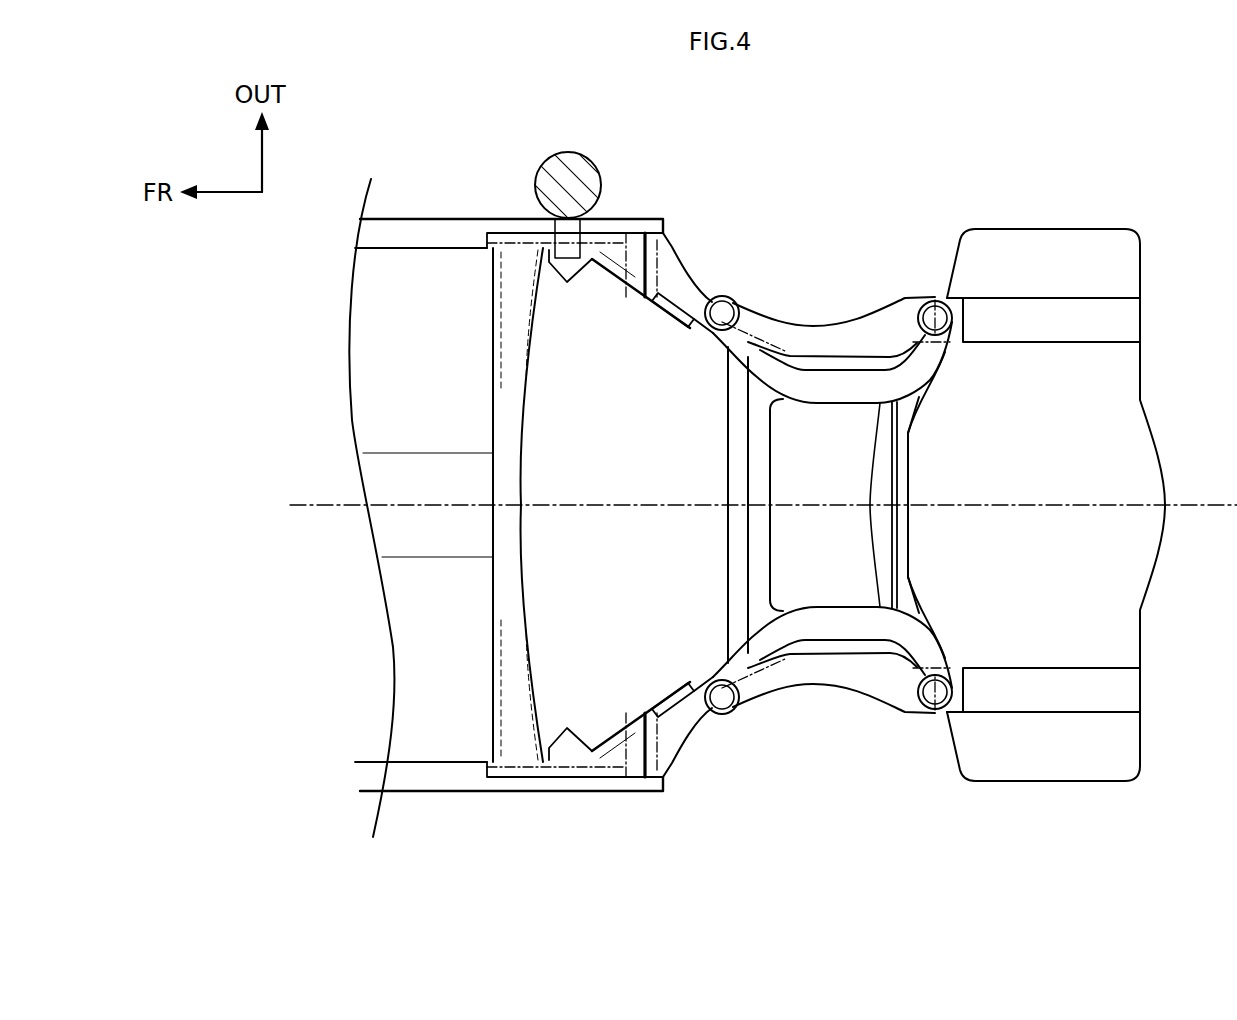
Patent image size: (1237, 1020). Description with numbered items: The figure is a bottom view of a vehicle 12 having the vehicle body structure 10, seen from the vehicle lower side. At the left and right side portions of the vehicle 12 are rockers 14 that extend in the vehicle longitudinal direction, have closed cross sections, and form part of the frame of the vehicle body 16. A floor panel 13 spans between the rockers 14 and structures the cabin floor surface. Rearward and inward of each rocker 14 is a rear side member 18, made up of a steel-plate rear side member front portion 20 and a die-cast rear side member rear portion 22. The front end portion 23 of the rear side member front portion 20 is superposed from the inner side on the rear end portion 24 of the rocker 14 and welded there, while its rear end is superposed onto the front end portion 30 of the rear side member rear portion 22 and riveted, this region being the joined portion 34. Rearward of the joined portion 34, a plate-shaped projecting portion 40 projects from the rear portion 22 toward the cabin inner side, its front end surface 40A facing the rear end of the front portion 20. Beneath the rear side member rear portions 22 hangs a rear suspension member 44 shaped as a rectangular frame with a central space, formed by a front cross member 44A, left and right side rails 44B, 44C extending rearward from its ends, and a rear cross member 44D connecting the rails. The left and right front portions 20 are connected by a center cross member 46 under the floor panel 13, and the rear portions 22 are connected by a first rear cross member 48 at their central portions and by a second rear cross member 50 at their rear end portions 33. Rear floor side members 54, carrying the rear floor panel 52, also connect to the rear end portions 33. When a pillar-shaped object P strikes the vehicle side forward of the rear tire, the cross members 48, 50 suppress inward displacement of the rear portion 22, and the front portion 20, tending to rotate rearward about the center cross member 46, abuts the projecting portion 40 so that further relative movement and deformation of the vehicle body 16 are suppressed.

The vehicle body structure 10 is at (851, 210).
The vehicle 12 is at (1004, 134).
The floor panel 13 is at (437, 433).
The rocker 14 is at (420, 219).
The vehicle body 16 is at (692, 190).
The rear side member 18 is at (631, 320).
The rear side member front portion 20 is at (617, 264).
The rear side member rear portion 22 is at (822, 329).
The front end portion 23 is at (497, 256).
The rear end portion 24 is at (517, 228).
The front end portion 30 is at (645, 262).
The rear end portion 33 is at (958, 346).
The joined portion 34 is at (630, 293).
The projecting portion 40 is at (667, 323).
The front end surface 40A is at (651, 312).
The rear suspension member 44 is at (952, 380).
The front cross member 44A is at (759, 538).
The side rail 44B is at (832, 397).
The side rail 44C is at (807, 545).
The rear cross member 44D is at (903, 538).
The center cross member 46 is at (518, 574).
The first rear cross member 48 is at (727, 448).
The second rear cross member 50 is at (918, 410).
The rear floor panel 52 is at (1131, 439).
The rear floor side member 54 is at (1085, 334).
The pillar-shaped object P is at (580, 163).